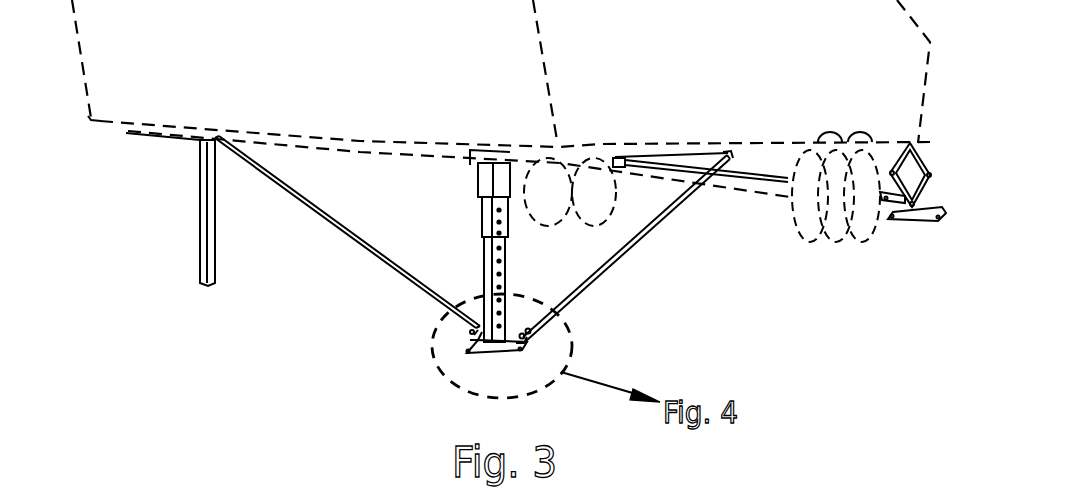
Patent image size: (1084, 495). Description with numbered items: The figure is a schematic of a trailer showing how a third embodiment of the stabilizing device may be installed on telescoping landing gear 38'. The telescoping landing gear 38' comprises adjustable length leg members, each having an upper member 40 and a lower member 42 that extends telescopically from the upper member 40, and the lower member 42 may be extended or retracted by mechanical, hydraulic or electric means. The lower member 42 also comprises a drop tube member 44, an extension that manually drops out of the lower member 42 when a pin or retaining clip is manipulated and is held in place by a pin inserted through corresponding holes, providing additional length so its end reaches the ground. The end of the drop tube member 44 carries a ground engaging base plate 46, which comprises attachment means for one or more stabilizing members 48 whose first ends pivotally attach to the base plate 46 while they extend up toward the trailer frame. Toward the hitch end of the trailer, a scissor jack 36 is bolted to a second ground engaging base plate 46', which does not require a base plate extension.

The scissor jack 36 is at (914, 150).
The telescoping landing gear 38' is at (326, 213).
The upper member 40 is at (478, 175).
The lower member 42 is at (508, 212).
The drop tube member 44 is at (507, 284).
The ground engaging base plate 46 is at (486, 357).
The ground engaging base plate 46' is at (916, 244).
The stabilizing member 48 is at (310, 214).